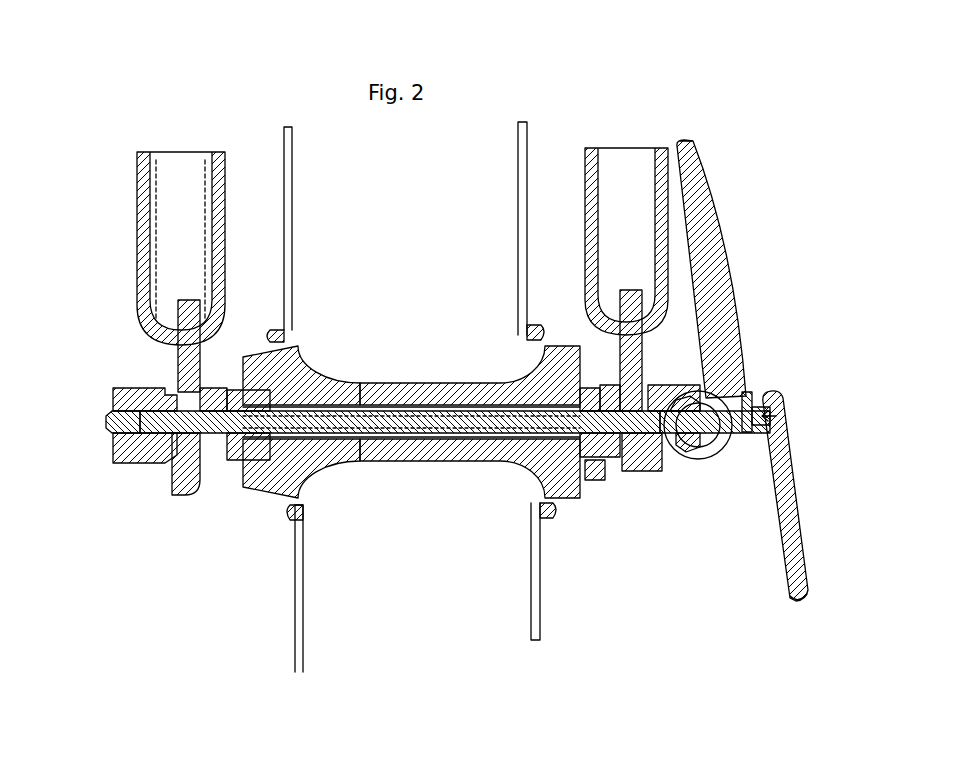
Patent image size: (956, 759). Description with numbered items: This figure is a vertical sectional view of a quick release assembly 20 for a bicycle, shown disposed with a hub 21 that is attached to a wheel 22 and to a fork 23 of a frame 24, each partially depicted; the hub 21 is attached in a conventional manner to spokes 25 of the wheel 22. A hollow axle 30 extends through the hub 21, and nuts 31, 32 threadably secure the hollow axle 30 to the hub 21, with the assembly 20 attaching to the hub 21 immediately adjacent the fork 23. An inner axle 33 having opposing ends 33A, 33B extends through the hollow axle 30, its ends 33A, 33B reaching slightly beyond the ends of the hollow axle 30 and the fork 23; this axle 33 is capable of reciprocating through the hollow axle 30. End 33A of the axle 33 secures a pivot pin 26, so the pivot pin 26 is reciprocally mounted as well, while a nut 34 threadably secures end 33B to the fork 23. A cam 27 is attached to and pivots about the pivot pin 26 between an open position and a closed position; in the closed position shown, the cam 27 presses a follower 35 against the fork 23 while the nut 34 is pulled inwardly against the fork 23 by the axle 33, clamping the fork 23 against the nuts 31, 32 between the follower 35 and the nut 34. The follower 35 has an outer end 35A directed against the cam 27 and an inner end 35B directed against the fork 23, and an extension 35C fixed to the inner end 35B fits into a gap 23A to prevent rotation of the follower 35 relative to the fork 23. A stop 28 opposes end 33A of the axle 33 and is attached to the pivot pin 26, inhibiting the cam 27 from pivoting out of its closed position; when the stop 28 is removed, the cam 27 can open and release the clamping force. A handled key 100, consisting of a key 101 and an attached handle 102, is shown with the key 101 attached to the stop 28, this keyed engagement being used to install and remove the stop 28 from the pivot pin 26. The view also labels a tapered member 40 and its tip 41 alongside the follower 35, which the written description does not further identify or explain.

The quick release assembly 20 is at (806, 326).
The hub 21 is at (365, 383).
The wheel 22 is at (297, 186).
The fork 23 is at (178, 178).
The gap 23A is at (592, 480).
The frame 24 is at (136, 256).
The spokes 25 is at (290, 232).
The pivot pin 26 is at (735, 392).
The cam 27 is at (726, 462).
The stop 28 is at (752, 394).
The hollow axle 30 is at (410, 383).
The nut 31 is at (588, 404).
The nut 32 is at (210, 466).
The axle 33 is at (392, 433).
The end 33A is at (688, 466).
The end 33B is at (110, 440).
The nut 34 is at (128, 464).
The follower 35 is at (664, 340).
The outer end 35A is at (722, 370).
The inner end 35B is at (600, 350).
The extension 35C is at (648, 490).
The sprocket 40 is at (712, 218).
The sprocket tooth 41 is at (705, 168).
The handled key 100 is at (800, 496).
The key 101 is at (778, 408).
The handle 102 is at (796, 566).